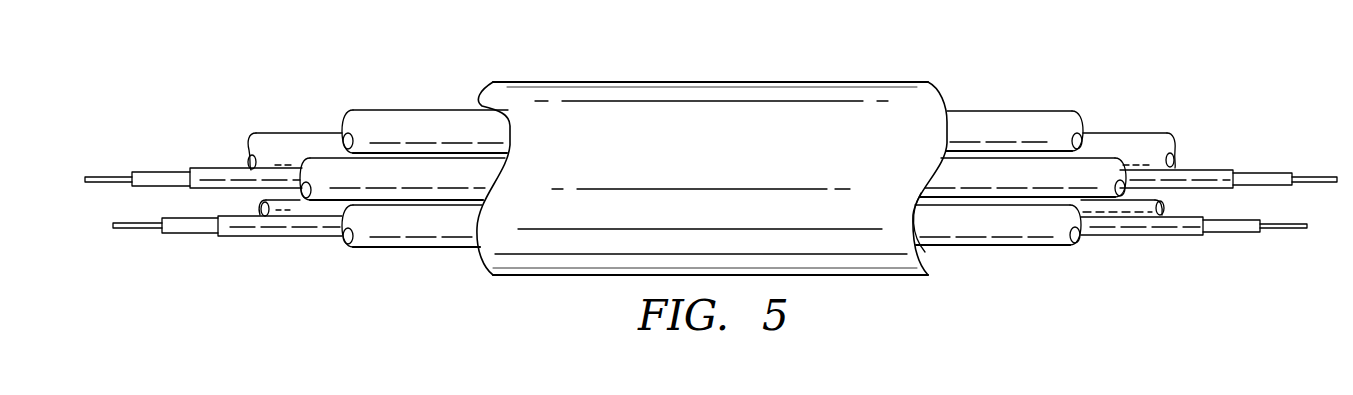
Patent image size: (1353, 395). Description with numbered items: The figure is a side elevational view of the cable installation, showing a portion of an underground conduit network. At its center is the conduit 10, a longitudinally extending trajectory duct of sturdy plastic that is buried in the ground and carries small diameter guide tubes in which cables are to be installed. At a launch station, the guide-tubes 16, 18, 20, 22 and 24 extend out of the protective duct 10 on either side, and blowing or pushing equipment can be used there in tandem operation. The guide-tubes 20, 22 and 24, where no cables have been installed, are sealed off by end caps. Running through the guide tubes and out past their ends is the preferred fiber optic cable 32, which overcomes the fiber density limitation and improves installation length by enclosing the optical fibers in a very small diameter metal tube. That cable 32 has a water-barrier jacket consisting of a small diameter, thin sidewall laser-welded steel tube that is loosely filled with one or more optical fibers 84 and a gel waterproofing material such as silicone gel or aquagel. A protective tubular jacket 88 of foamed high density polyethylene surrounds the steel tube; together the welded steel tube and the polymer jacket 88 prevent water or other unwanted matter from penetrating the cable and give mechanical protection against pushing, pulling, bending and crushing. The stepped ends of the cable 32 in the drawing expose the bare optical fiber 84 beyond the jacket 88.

The conduit 10 is at (712, 80).
The guide tube 16 is at (412, 248).
The guide tube 18 is at (323, 157).
The guide tube 20 is at (1010, 110).
The guide tube 22 is at (1152, 132).
The guide tube 24 is at (1130, 203).
The fiber optic cable 32 is at (228, 168).
The optical fiber 84 is at (1313, 176).
The protective tubular jacket 88 is at (1262, 170).